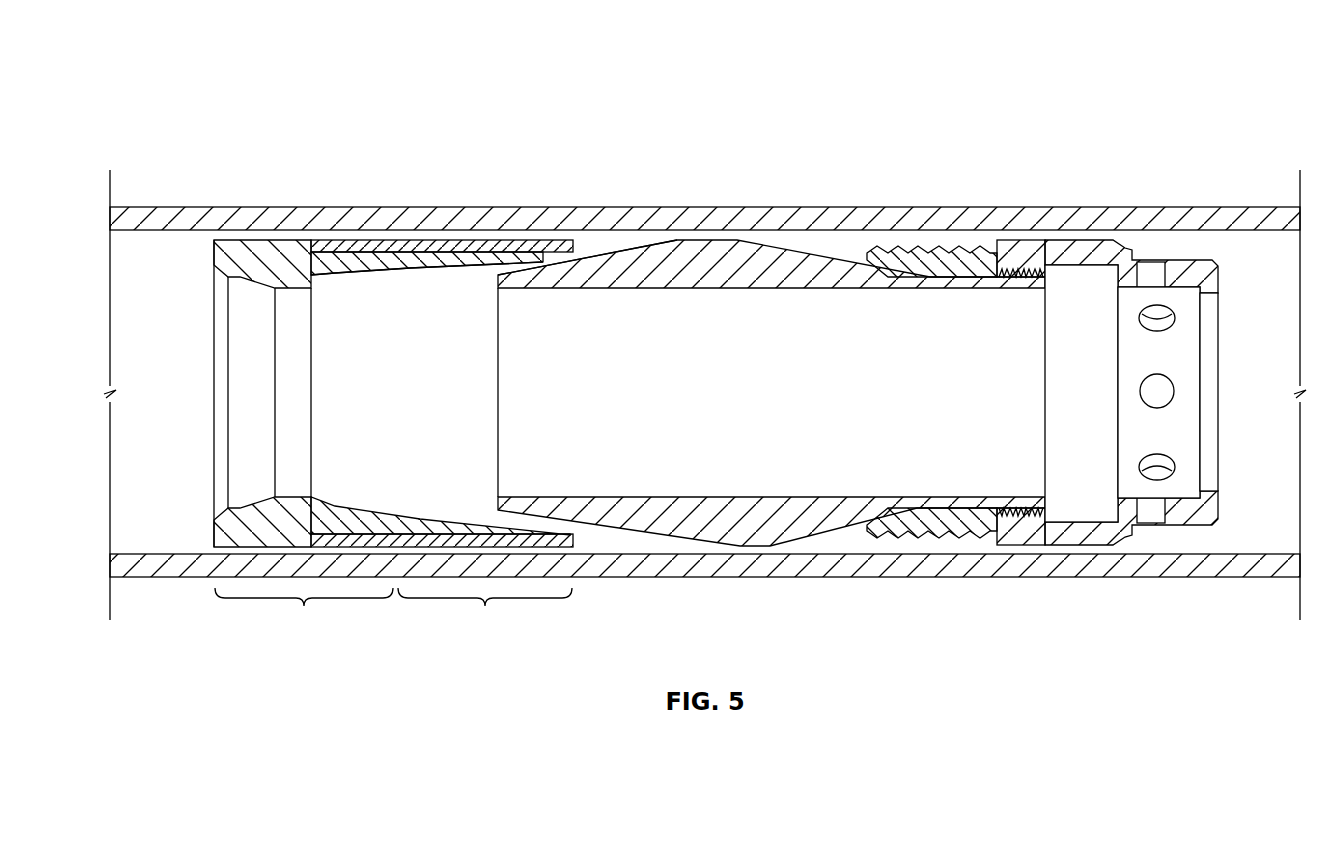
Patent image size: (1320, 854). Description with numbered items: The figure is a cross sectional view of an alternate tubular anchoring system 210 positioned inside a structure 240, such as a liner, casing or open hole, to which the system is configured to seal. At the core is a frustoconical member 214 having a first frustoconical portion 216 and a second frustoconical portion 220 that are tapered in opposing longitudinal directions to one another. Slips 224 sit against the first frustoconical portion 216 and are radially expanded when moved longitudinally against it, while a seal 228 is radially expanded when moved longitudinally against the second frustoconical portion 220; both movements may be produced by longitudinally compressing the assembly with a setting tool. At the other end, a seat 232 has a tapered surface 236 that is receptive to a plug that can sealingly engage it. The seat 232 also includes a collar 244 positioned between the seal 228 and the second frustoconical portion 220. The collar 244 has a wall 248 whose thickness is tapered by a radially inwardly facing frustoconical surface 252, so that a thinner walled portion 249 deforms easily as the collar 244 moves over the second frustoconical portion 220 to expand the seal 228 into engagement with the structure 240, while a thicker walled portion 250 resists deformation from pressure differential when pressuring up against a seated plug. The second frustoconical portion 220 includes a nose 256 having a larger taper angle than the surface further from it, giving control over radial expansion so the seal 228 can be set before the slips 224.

The tubular anchoring system 210 is at (1176, 110).
The frustoconical member 214 is at (775, 258).
The first frustoconical portion 216 is at (853, 258).
The second frustoconical portion 220 is at (535, 267).
The slips 224 is at (957, 527).
The seal 228 is at (567, 538).
The seat 232 is at (250, 525).
The surface 236 is at (240, 278).
The structure 240 is at (1222, 553).
The collar 244 is at (335, 262).
The wall 248 is at (415, 258).
The thinner walled portion 249 is at (485, 615).
The thicker walled portion 250 is at (304, 615).
The frustoconical surface 252 is at (369, 504).
The nose 256 is at (603, 262).